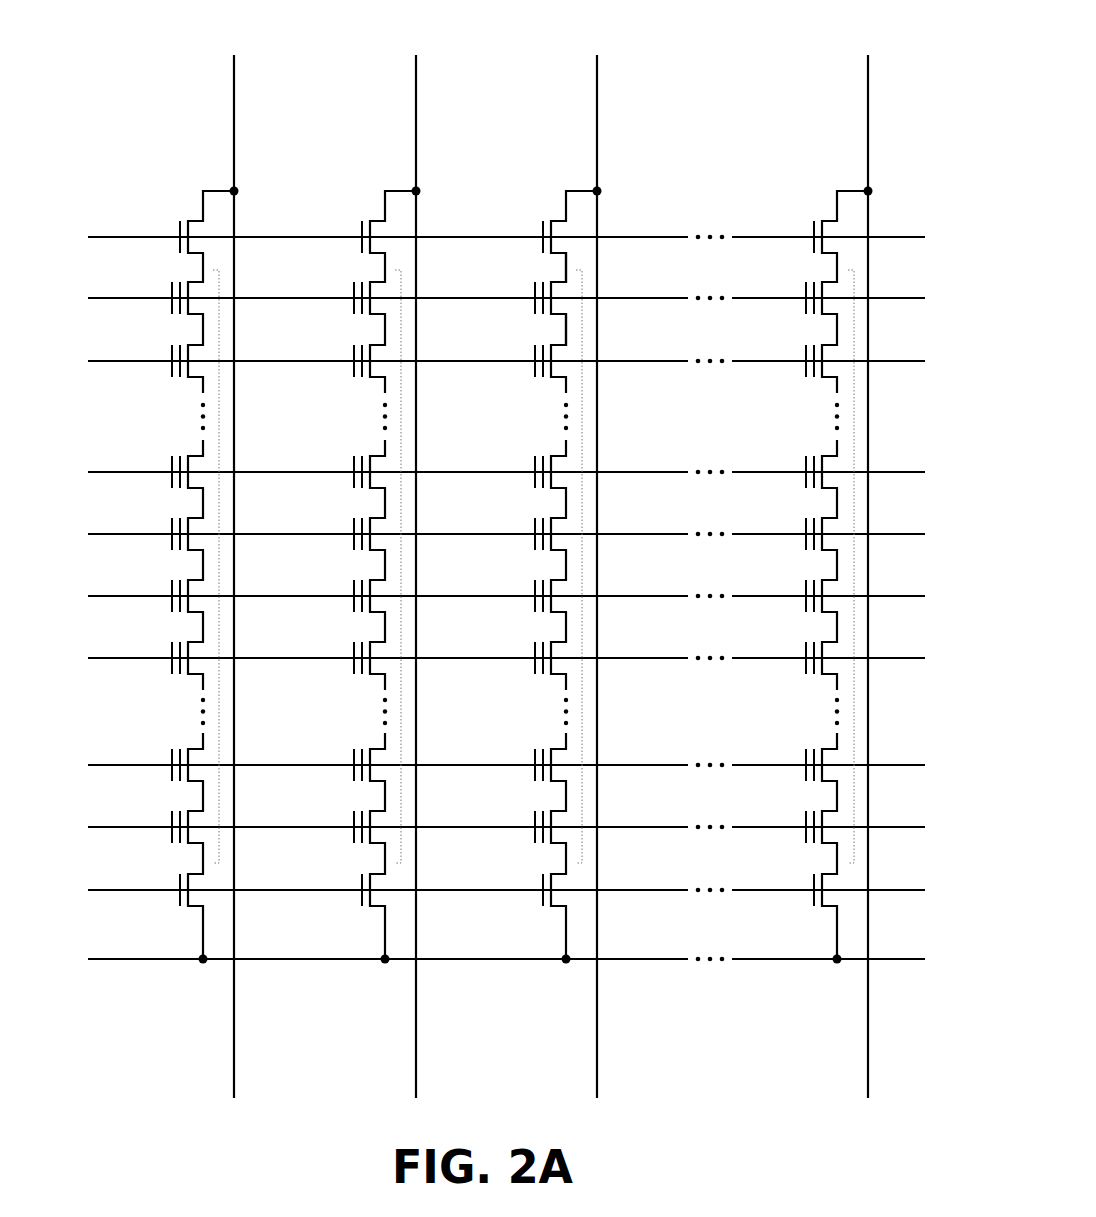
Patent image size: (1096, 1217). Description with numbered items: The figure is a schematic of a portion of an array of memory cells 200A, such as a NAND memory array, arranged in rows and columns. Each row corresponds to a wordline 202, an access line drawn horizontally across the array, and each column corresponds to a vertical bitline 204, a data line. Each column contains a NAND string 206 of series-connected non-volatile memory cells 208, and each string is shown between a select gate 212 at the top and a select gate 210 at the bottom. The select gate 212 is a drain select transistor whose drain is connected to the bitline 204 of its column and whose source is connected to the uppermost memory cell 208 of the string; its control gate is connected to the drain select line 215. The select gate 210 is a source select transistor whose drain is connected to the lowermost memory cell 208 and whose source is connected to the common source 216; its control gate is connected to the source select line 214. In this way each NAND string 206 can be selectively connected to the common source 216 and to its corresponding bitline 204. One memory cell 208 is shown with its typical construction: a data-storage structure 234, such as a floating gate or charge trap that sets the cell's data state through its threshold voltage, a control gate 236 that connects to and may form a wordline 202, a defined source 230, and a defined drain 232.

The array of memory cells 200A is at (768, 54).
The bitline 204 is at (237, 110).
The select line 215 is at (772, 236).
The wordline 202 is at (134, 297).
The select line 214 is at (757, 889).
The common source 216 is at (160, 962).
The NAND string 206 is at (222, 570).
The select gate 212 is at (190, 220).
The select gate 210 is at (190, 908).
The memory cell 208 is at (443, 556).
The data-storage structure 234 is at (541, 282).
The control gate 236 is at (536, 312).
The source/drain 232 is at (569, 278).
The source/drain 230 is at (569, 330).